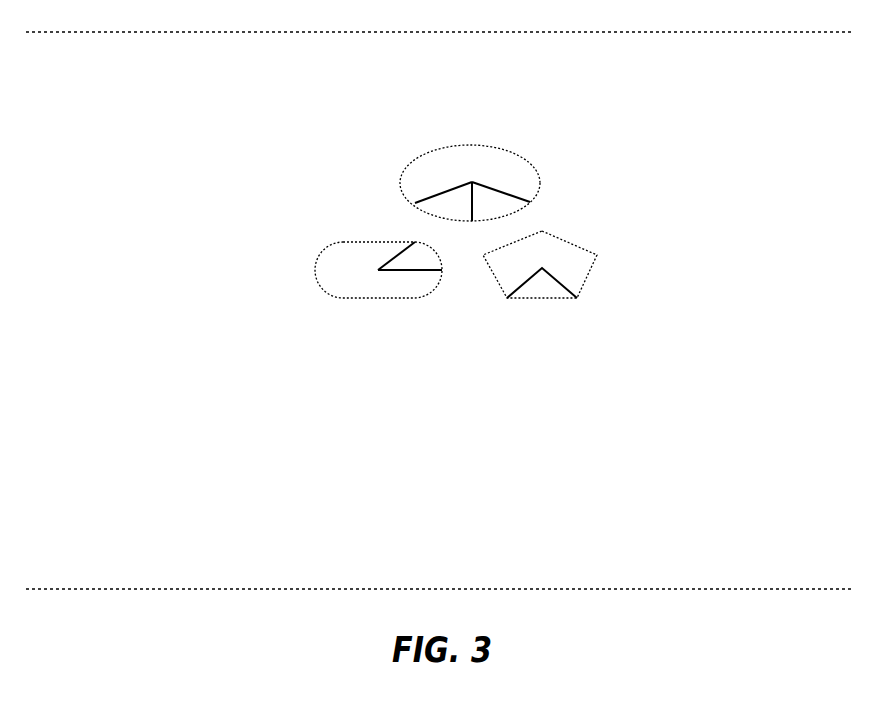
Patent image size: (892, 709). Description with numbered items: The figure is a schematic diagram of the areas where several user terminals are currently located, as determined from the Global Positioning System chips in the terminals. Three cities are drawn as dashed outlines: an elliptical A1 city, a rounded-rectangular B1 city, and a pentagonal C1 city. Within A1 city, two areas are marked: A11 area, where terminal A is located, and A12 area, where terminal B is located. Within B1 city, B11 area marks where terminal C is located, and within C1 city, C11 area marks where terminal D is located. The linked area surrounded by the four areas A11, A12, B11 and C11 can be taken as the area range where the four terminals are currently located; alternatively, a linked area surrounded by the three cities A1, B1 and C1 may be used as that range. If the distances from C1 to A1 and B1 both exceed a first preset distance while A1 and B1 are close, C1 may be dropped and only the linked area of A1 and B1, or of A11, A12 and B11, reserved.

The city A1 is at (495, 147).
The area A11 is at (458, 203).
The area A12 is at (500, 202).
The city B1 is at (313, 268).
The area B11 is at (420, 258).
The city C1 is at (565, 238).
The area C11 is at (545, 287).